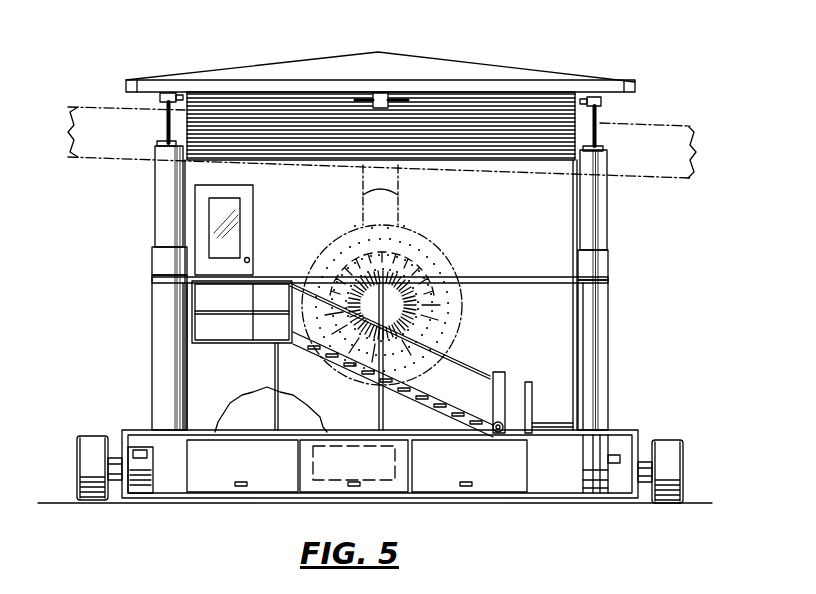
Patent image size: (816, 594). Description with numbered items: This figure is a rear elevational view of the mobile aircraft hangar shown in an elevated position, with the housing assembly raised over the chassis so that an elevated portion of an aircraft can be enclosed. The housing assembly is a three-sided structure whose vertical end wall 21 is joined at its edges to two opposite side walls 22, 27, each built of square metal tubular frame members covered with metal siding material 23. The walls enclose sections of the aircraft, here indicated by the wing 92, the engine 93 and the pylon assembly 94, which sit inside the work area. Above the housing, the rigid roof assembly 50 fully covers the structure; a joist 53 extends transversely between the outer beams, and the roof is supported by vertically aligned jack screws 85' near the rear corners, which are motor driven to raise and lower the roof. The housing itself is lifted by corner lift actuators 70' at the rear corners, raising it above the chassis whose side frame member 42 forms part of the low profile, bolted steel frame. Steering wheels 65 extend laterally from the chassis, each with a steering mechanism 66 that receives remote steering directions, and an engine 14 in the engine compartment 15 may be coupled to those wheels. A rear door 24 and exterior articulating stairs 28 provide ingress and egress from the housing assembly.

The roof assembly 50 is at (318, 60).
The joist 53 is at (445, 80).
The jack screw 85' is at (374, 103).
The wing 92 is at (690, 152).
The corner lift actuator 70' is at (371, 285).
The rear door 24 is at (240, 197).
The end wall 21 is at (380, 261).
The pylon assembly 94 is at (387, 190).
The engine 93 is at (452, 308).
The side wall 27 is at (183, 332).
The side wall 22 is at (578, 340).
The exterior articulating stairs 28 is at (305, 348).
The metal siding material 23 is at (228, 410).
The steering mechanism 66 is at (118, 458).
The steering wheel 65 is at (92, 458).
The side frame member 42 is at (155, 498).
The engine 14 is at (328, 492).
The engine compartment 15 is at (378, 480).